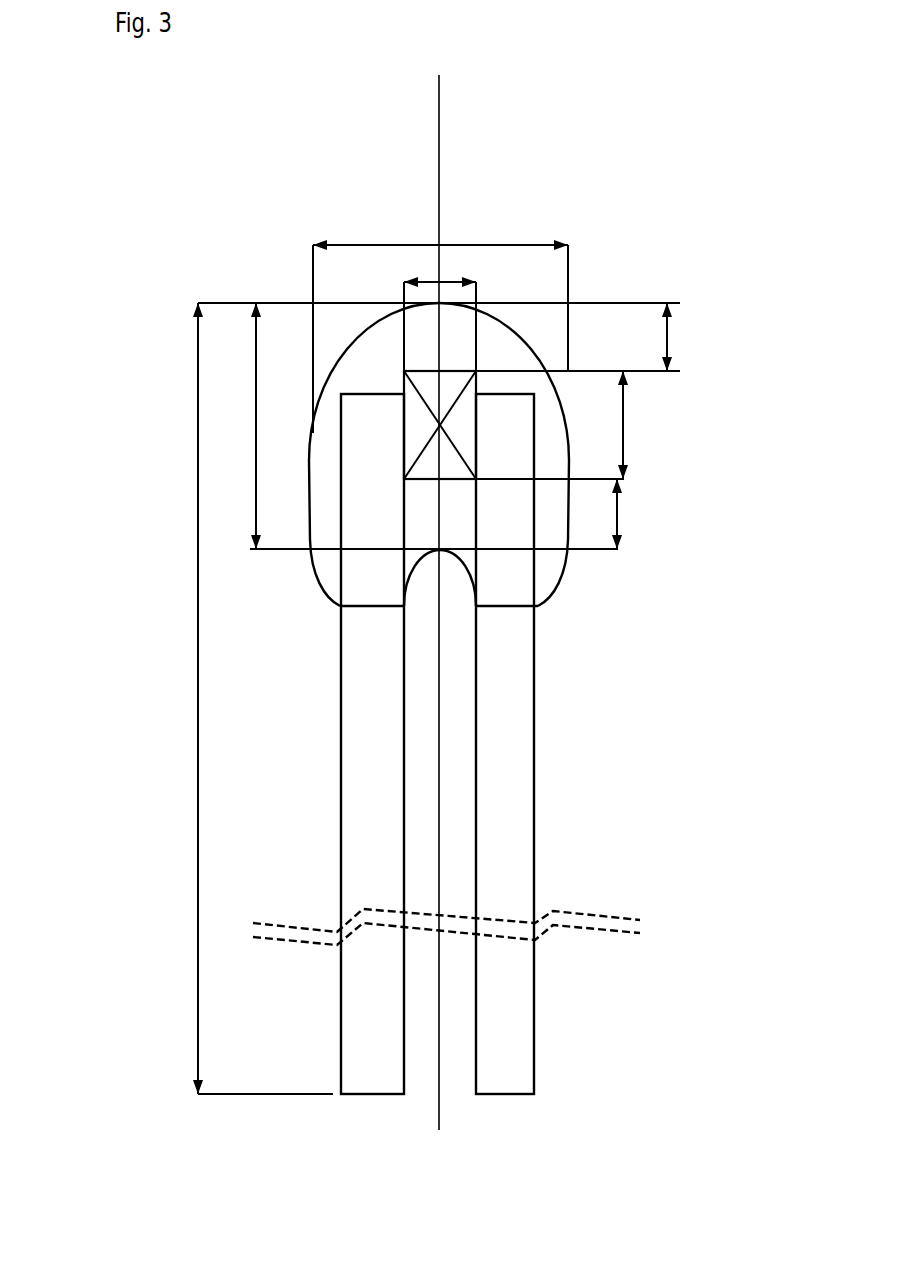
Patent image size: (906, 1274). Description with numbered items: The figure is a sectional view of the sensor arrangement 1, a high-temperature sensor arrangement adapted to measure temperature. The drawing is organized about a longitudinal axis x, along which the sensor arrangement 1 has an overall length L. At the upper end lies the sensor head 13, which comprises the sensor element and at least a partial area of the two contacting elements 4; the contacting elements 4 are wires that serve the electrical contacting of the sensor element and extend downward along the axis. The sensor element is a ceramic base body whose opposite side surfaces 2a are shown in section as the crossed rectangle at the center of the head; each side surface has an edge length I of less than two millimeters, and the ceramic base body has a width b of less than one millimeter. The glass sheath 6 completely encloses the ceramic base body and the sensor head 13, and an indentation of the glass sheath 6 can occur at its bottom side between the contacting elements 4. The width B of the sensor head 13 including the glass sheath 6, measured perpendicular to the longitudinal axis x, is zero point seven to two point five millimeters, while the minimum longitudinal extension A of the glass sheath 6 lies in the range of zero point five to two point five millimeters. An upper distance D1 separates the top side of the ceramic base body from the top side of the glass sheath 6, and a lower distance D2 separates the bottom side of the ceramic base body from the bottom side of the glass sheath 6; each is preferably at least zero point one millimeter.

The sensor arrangement 1 is at (347, 698).
The sensor head 13 is at (268, 456).
The contacting elements 4 is at (500, 790).
The side surfaces 2a is at (477, 449).
The glass sheath 6 is at (540, 589).
The longitudinal axis x is at (439, 166).
The width of the sensor head B is at (350, 244).
The width of the ceramic base body b is at (445, 280).
The minimum longitudinal extension of the glass sheath A is at (252, 378).
The overall length L is at (198, 813).
The upper distance D1 is at (668, 340).
The edge length I is at (623, 425).
The lower distance D2 is at (617, 518).